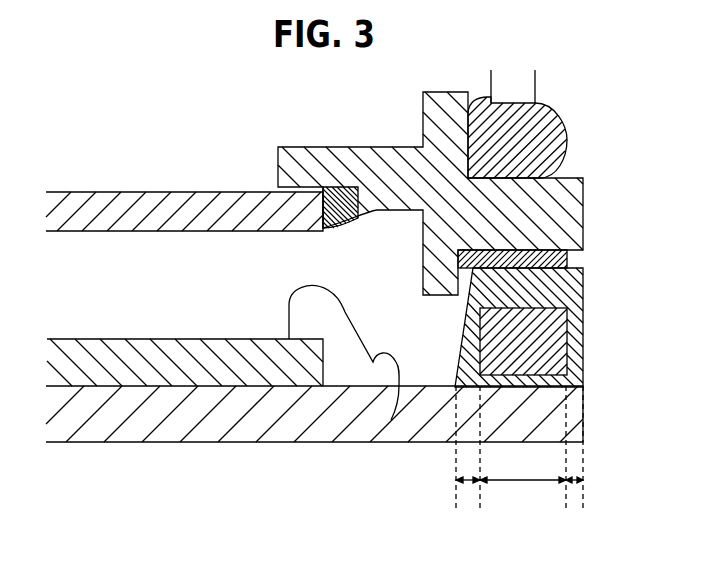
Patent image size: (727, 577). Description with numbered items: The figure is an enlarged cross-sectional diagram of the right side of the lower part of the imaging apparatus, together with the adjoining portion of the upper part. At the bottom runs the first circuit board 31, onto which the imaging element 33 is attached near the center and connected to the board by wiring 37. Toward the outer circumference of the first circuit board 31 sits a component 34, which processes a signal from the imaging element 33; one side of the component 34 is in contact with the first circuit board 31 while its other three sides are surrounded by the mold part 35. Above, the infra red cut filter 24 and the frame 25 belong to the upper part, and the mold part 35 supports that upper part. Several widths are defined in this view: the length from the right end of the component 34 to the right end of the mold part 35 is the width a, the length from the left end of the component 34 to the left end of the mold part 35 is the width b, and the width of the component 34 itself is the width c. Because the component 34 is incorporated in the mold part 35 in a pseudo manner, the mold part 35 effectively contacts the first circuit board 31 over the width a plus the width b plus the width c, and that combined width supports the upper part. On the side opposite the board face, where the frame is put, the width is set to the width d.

The infra red cut filter (IRCF) 24 is at (138, 210).
The frame 25 is at (563, 213).
The width d is at (566, 257).
The mold part 35 is at (563, 290).
The component 34 is at (548, 342).
The imaging element 33 is at (127, 355).
The first circuit board 31 is at (287, 423).
The wiring 37 is at (392, 440).
The width a is at (574, 493).
The width b is at (468, 493).
The width c is at (523, 493).